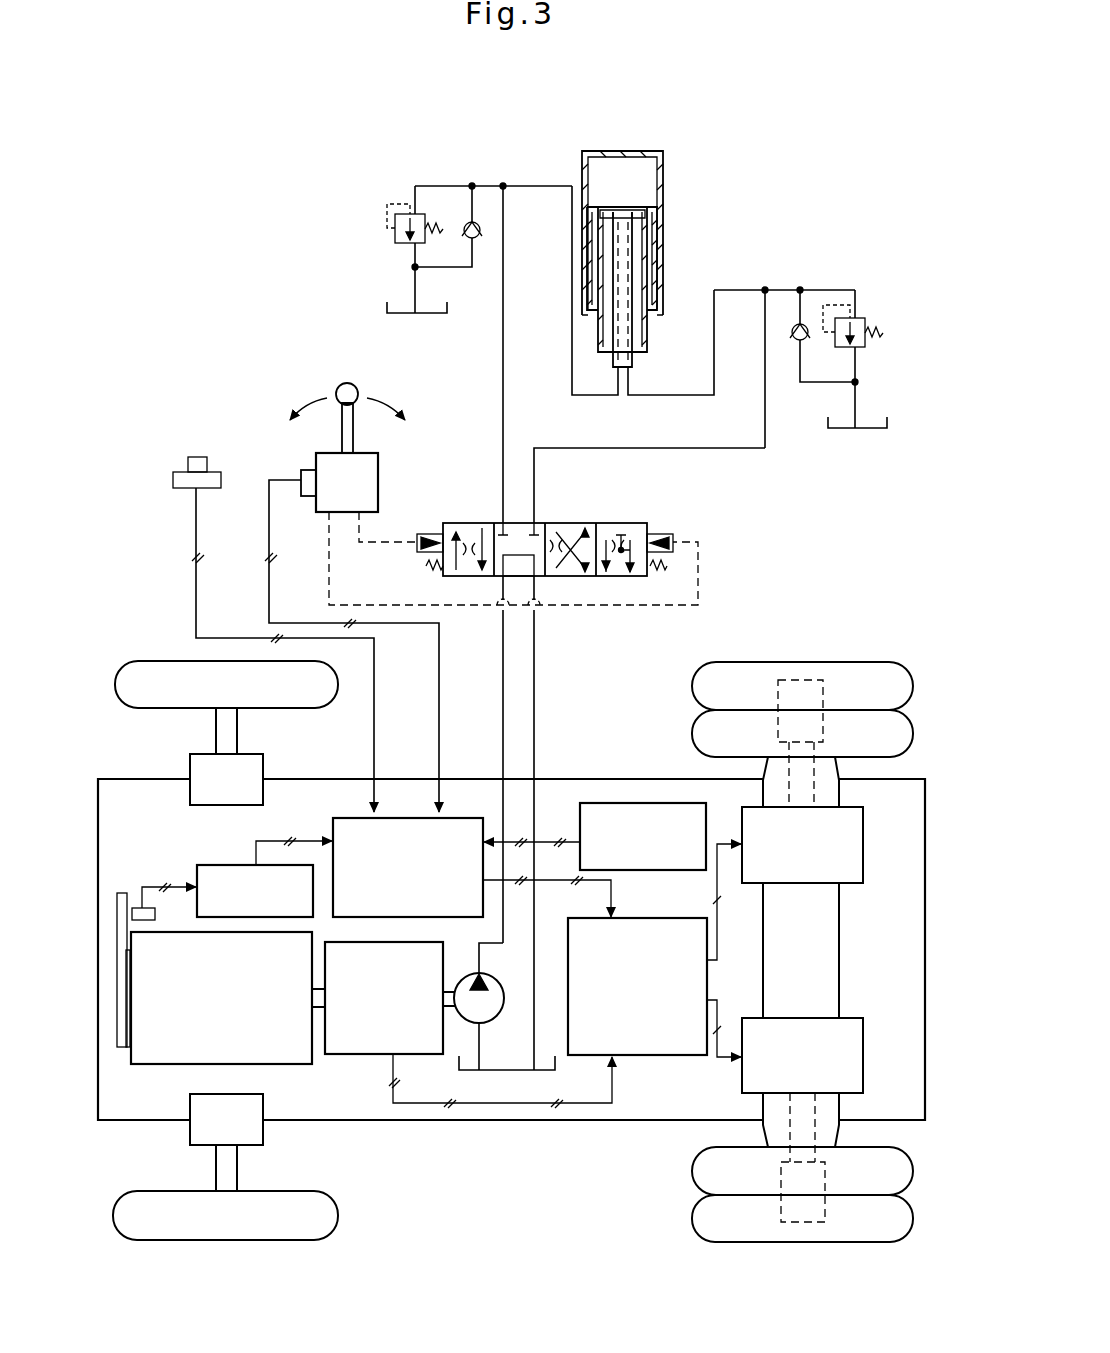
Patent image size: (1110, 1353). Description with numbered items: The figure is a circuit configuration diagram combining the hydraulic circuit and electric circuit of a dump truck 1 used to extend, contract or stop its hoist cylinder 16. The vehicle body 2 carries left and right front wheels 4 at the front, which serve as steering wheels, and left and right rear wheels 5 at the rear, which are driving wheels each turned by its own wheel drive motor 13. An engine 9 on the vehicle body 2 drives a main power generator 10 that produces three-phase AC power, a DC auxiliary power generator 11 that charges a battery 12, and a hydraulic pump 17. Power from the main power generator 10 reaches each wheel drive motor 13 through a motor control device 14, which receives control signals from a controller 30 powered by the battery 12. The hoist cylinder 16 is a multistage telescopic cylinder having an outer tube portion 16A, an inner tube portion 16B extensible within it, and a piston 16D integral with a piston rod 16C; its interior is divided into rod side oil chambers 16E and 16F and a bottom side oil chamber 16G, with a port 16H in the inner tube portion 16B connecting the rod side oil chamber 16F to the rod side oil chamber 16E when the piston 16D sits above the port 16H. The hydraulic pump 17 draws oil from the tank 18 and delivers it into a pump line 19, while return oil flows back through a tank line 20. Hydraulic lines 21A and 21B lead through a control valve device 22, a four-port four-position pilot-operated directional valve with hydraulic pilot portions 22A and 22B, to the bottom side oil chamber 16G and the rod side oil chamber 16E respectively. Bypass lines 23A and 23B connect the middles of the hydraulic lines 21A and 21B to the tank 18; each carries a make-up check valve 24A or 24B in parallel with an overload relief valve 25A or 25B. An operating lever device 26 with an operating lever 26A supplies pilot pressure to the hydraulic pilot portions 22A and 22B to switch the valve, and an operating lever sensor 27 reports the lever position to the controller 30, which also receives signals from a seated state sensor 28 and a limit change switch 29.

The dump truck 1 is at (403, 1124).
The vehicle body 2 is at (565, 1113).
The front wheels 4 is at (151, 672).
The rear wheels 5 is at (853, 672).
The engine 9 is at (152, 1065).
The main power generator 10 is at (355, 1054).
The auxiliary power generator 11 is at (137, 907).
The battery 12 is at (226, 865).
The wheel drive motors 13 is at (848, 843).
The motor control device 14 is at (640, 1047).
The hoist cylinder 16 is at (621, 243).
The outer tube portion 16A is at (661, 195).
The inner tube portion 16B is at (598, 281).
The piston rod 16C is at (630, 361).
The piston 16D is at (622, 213).
The bottom side oil chamber 16G is at (653, 166).
The port 16H is at (645, 226).
The rod side oil chamber 16F is at (654, 262).
The rod side oil chamber 16E is at (612, 336).
The hydraulic pump 17 is at (469, 1012).
The operating oil tank 18 is at (503, 1066).
The pump line 19 is at (502, 719).
The tank line 20 is at (535, 719).
The hydraulic line 21A is at (502, 402).
The hydraulic line 21B is at (689, 448).
The control valve device 22 is at (642, 523).
The hydraulic pilot portion 22A is at (437, 542).
The hydraulic pilot portion 22B is at (673, 532).
The bypass line 23A is at (495, 184).
The bypass line 23B is at (798, 287).
The check valve 24A is at (472, 240).
The check valve 24B is at (800, 342).
The relief valve 25A is at (395, 236).
The relief valve 25B is at (861, 320).
The operating lever device 26 is at (378, 465).
The operating lever 26A is at (342, 432).
The operating lever sensor 27 is at (306, 497).
The seated state sensor 28 is at (592, 810).
The limit change switch 29 is at (195, 456).
The controller 30 is at (403, 830).